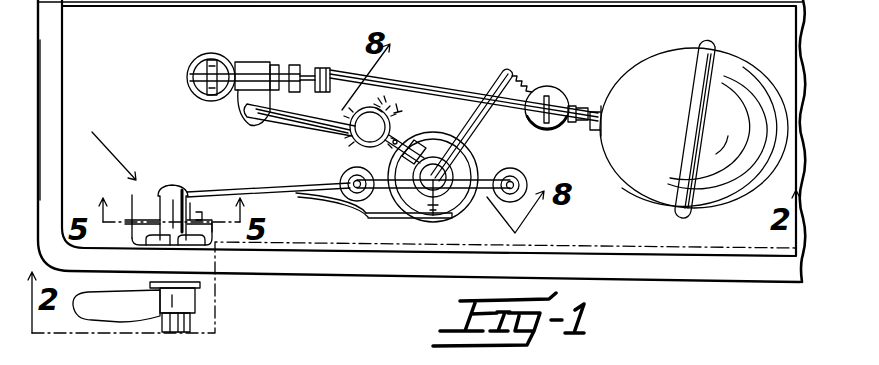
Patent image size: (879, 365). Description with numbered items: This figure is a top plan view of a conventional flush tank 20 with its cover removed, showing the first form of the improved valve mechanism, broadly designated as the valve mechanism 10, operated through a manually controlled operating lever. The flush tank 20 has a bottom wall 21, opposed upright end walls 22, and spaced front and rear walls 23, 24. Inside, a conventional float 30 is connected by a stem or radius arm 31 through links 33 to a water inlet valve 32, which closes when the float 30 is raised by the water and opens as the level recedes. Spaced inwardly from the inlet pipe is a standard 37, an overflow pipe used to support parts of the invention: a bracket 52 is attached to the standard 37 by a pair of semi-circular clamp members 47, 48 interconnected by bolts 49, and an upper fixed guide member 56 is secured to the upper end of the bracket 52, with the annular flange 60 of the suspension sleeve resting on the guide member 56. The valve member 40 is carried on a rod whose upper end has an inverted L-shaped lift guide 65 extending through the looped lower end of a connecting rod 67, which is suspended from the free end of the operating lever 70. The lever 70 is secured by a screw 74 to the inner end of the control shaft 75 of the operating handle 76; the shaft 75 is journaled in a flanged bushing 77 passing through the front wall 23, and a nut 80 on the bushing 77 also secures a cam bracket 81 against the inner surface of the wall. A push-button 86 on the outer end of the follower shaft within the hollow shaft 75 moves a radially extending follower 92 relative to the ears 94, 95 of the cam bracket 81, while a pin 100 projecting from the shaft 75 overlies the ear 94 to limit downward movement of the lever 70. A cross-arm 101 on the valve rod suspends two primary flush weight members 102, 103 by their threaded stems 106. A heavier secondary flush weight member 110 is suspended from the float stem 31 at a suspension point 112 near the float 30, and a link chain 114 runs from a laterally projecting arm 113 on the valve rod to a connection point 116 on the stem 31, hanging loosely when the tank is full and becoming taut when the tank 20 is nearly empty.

The flush valve assembly 10 is at (119, 150).
The flush tank 20 is at (370, 279).
The bottom wall 21 is at (471, 27).
The end walls 22 is at (55, 61).
The front wall 23 is at (608, 277).
The rear wall 24 is at (548, 2).
The float 30 is at (651, 107).
The stem or radius arm 31 is at (448, 72).
The water inlet valve 32 is at (188, 64).
The links 33 is at (262, 60).
The standard 37 is at (350, 134).
The valve member 40 is at (473, 224).
The clamp member 47 is at (398, 138).
The clamp member 48 is at (380, 96).
The bolts 49 is at (398, 104).
The bracket 52 is at (429, 148).
The upper fixed guide member 56 is at (452, 162).
The annular flange 60 is at (456, 170).
The lift guide 65 is at (392, 221).
The connecting rod 67 is at (430, 216).
The operating lever 70 is at (280, 173).
The screw 74 is at (168, 184).
The control shaft or shank 75 is at (192, 196).
The operating handle 76 is at (111, 313).
The bushing 77 is at (149, 287).
The nut 80 is at (148, 244).
The cam bracket 81 is at (178, 242).
The push-button 86 is at (162, 334).
The follower 92 is at (126, 226).
The ear 94 is at (210, 208).
The ear 95 is at (130, 194).
The rod or pin 100 is at (204, 208).
The transverse bar or cross-arm 101 is at (356, 222).
The primary flush weight member 102 is at (566, 174).
The primary flush weight member 103 is at (348, 184).
The threaded stem 106 is at (348, 170).
The secondary flush weight member 110 is at (548, 86).
The suspension point 112 is at (556, 96).
The arm 113 is at (508, 68).
The pliable element or link chain 114 is at (522, 74).
The connection point 116 is at (576, 106).